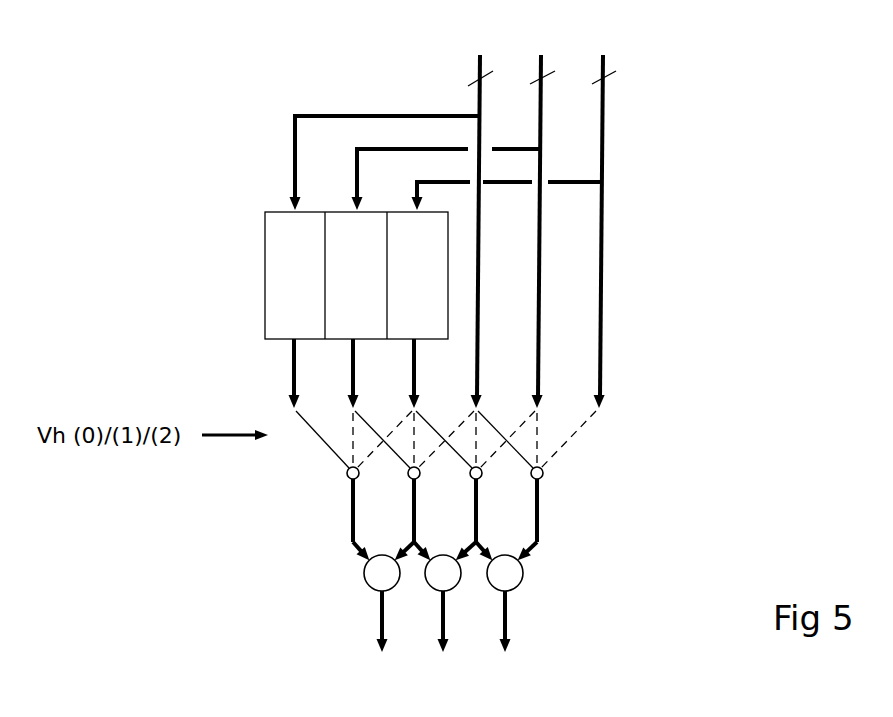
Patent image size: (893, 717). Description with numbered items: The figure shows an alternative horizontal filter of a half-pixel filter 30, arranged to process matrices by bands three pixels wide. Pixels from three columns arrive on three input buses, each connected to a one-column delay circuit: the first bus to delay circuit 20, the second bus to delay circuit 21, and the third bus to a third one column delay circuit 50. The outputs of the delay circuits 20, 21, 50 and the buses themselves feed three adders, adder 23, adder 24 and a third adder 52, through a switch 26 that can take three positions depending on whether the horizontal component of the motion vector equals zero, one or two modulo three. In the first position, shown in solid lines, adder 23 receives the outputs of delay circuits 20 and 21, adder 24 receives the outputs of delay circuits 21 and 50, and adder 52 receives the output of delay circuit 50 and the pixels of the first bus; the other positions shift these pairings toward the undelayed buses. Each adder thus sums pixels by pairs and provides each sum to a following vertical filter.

The delay circuit 20 is at (280, 238).
The delay circuit 21 is at (342, 221).
The third one column delay circuit 50 is at (397, 226).
The half-pixel filter 30 is at (669, 175).
The switch 26 is at (606, 442).
The adder 23 is at (367, 572).
The adder 24 is at (428, 584).
The third adder 52 is at (522, 577).